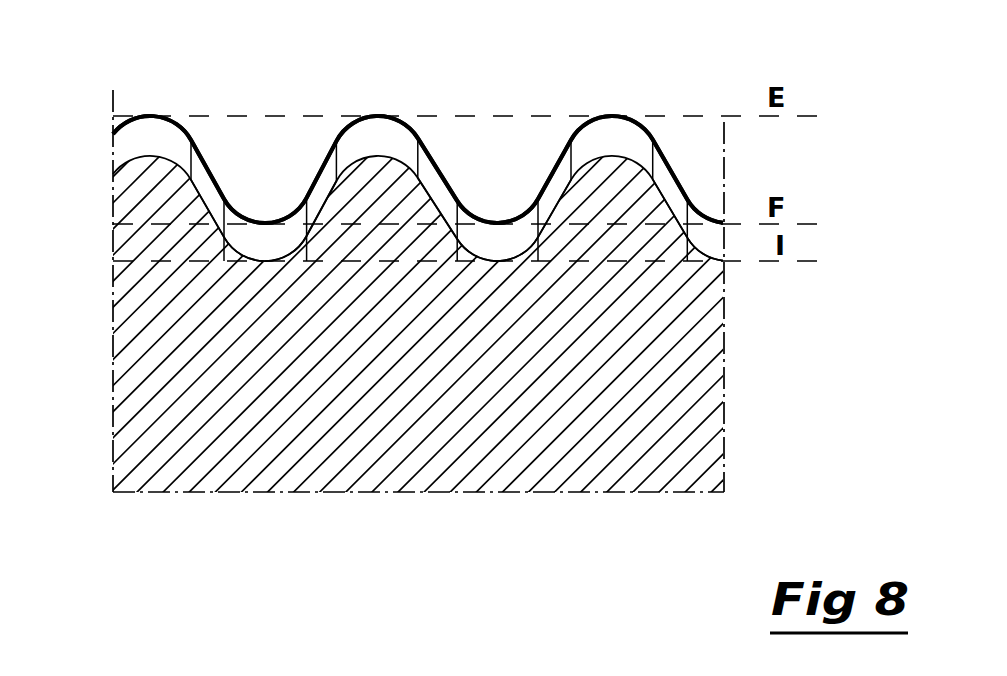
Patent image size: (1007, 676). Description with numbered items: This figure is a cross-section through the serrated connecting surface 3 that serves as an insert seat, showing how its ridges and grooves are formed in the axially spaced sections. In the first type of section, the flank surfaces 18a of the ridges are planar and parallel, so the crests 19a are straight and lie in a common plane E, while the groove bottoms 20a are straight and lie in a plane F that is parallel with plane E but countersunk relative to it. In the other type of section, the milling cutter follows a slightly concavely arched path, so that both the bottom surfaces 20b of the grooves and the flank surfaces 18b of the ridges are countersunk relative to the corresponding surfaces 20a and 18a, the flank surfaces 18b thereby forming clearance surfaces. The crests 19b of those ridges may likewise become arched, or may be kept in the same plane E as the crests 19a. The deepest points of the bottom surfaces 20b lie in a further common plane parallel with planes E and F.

The connecting surface 3 is at (695, 176).
The flank surfaces 18a is at (331, 147).
The flank surfaces 18b is at (210, 186).
The crests 19a is at (376, 116).
The crests 19b is at (593, 142).
The groove bottoms 20a is at (502, 220).
The bottom surfaces 20b is at (259, 256).